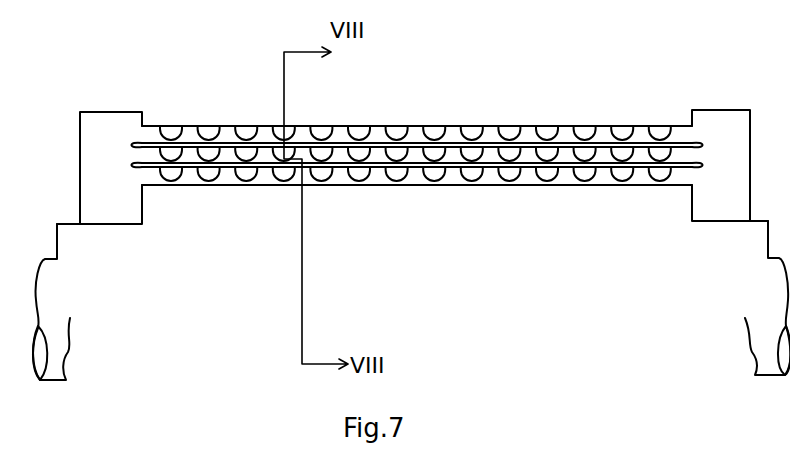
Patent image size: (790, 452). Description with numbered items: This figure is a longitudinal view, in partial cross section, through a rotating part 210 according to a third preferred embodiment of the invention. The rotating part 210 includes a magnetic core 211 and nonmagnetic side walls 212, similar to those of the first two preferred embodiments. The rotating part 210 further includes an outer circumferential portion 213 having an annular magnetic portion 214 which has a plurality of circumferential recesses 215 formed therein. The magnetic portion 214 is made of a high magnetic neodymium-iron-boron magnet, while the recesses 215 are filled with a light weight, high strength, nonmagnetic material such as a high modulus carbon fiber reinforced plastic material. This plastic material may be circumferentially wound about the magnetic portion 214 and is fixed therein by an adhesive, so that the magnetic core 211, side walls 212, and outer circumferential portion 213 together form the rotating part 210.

The rotating part 210 is at (417, 160).
The magnetic core 211 is at (220, 240).
The nonmagnetic side walls 212 is at (713, 122).
The outer circumferential portion 213 is at (567, 202).
The annular magnetic portion 214 is at (573, 127).
The circumferential recesses 215 is at (398, 125).